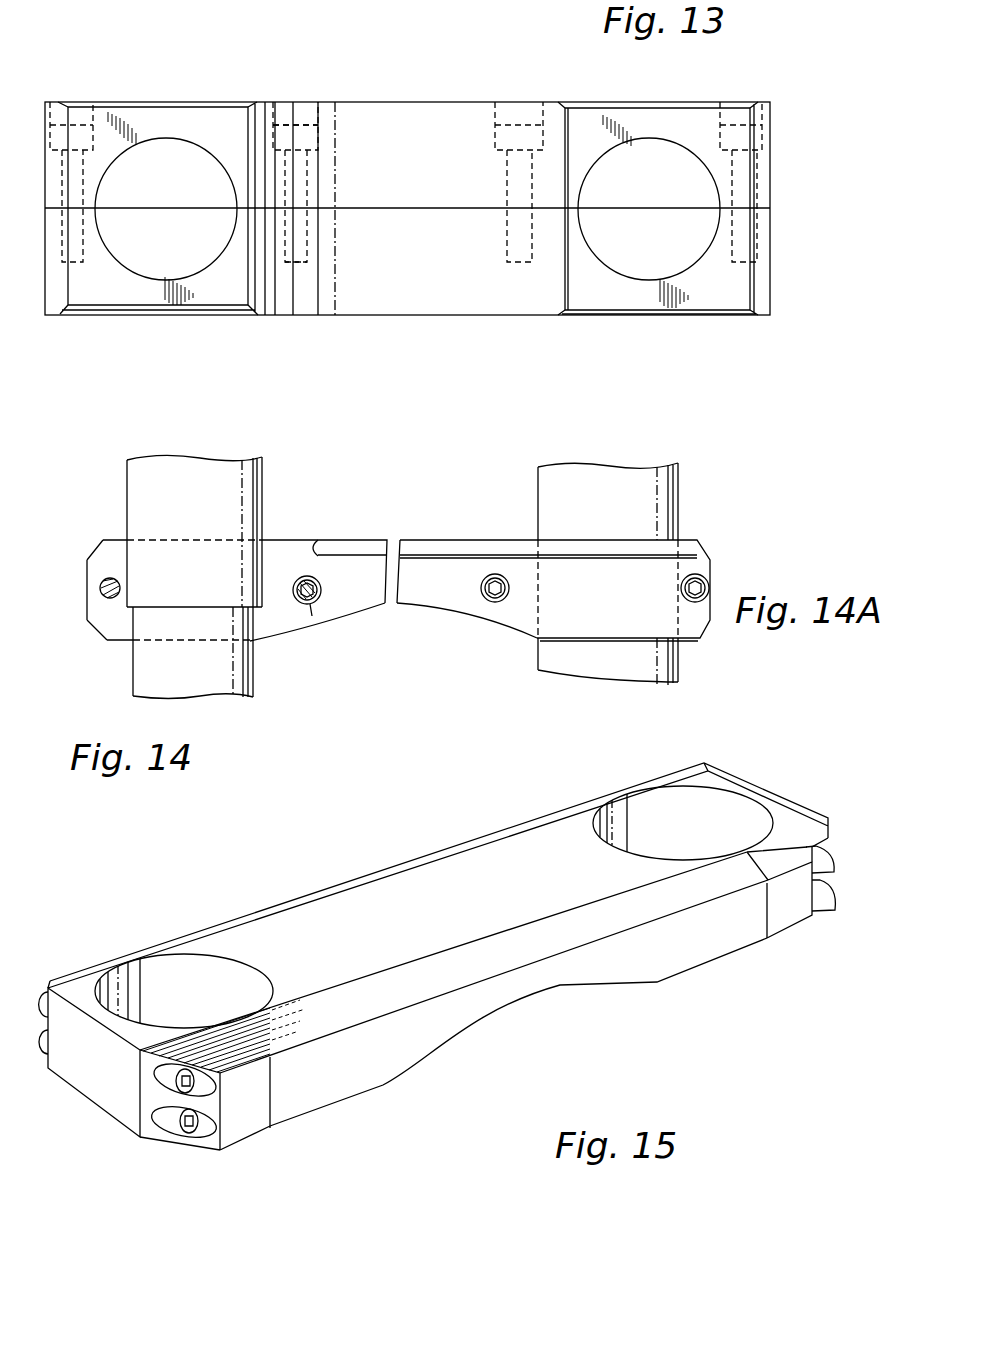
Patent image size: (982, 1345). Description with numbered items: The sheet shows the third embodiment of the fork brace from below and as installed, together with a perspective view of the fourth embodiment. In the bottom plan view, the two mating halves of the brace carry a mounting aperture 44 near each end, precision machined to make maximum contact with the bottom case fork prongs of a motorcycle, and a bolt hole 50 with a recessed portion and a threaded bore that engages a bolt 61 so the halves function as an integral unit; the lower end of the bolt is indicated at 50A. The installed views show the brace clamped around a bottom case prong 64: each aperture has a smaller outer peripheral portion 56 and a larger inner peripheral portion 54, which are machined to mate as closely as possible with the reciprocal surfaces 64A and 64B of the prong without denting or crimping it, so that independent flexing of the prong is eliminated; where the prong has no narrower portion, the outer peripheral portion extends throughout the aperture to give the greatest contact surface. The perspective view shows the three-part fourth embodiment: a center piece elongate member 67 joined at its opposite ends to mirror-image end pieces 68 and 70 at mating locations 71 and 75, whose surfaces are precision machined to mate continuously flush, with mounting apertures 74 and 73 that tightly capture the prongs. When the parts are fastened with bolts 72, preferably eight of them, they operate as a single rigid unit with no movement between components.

In FIG. 13, the mounting aperture 44 is at (148, 148).
In FIG. 13, the bolt hole 50 is at (275, 116).
In FIG. 13, the bolt shank end 50A is at (311, 249).
In FIG. 13, the bolt 61 is at (300, 128).
In FIG. 14, the bottom case prong 64 is at (262, 482).
In FIG. 14, the inner peripheral portion 54 is at (247, 633).
In FIG. 14, the outer peripheral portion 56 is at (258, 552).
In FIG. 14, the reciprocal portion of bottom case prong 64A is at (262, 566).
In FIG. 14, the narrower portion of bottom case prong 64B is at (253, 621).
In FIG. 15, the center piece elongate member 67 is at (433, 897).
In FIG. 15, the end piece 68 is at (718, 764).
In FIG. 15, the end piece 70 is at (96, 966).
In FIG. 15, the mating location 71 is at (268, 1128).
In FIG. 15, the bolt 72 is at (190, 1134).
In FIG. 15, the mounting aperture 73 is at (163, 965).
In FIG. 15, the mounting aperture 74 is at (657, 803).
In FIG. 15, the mating location 75 is at (761, 936).